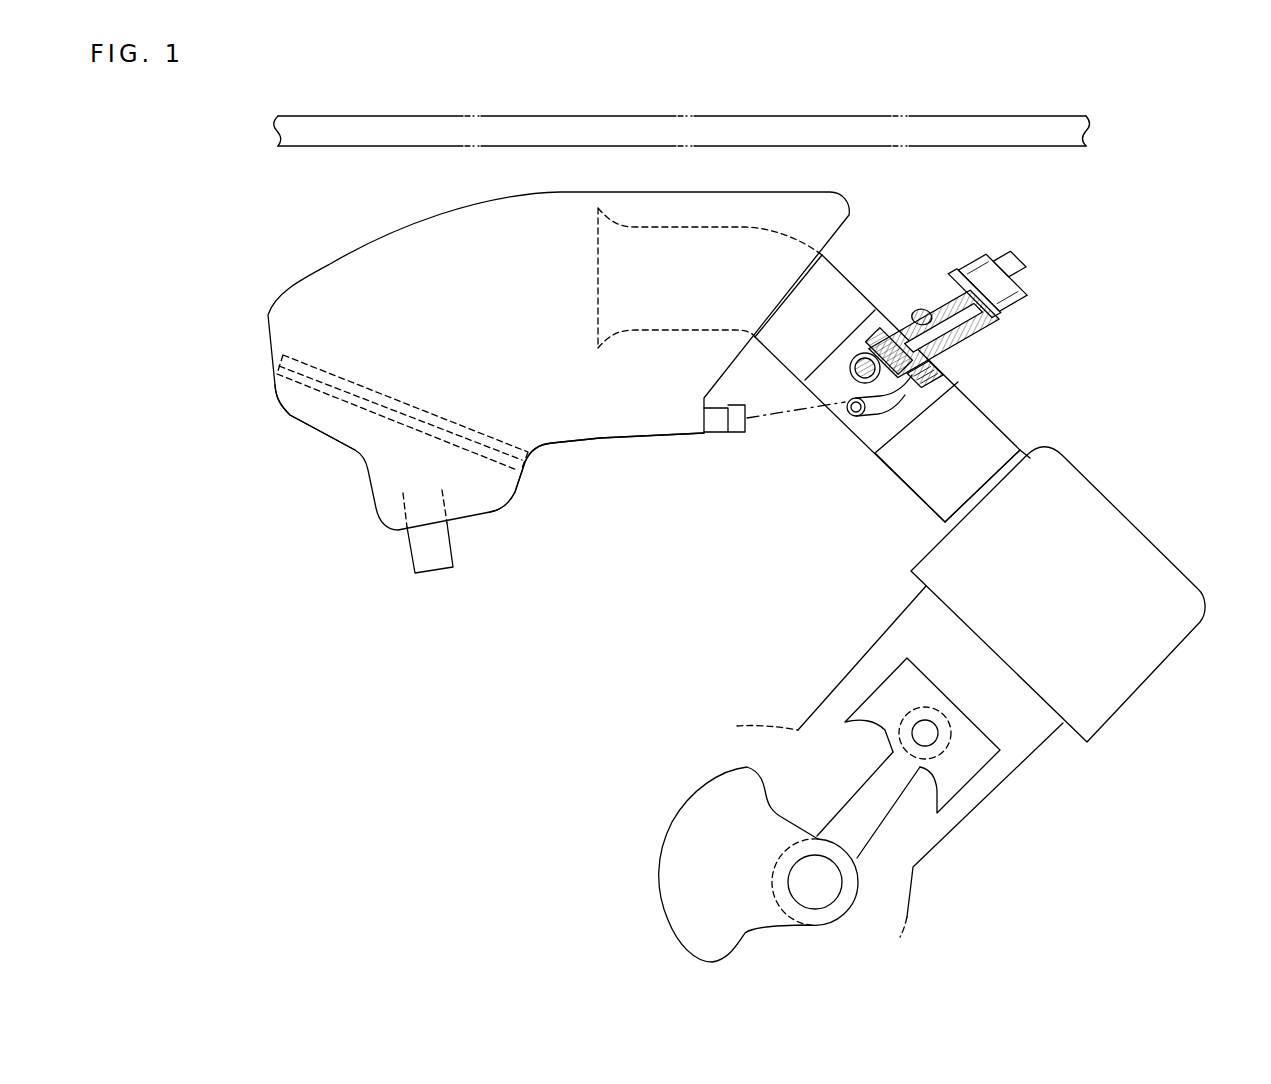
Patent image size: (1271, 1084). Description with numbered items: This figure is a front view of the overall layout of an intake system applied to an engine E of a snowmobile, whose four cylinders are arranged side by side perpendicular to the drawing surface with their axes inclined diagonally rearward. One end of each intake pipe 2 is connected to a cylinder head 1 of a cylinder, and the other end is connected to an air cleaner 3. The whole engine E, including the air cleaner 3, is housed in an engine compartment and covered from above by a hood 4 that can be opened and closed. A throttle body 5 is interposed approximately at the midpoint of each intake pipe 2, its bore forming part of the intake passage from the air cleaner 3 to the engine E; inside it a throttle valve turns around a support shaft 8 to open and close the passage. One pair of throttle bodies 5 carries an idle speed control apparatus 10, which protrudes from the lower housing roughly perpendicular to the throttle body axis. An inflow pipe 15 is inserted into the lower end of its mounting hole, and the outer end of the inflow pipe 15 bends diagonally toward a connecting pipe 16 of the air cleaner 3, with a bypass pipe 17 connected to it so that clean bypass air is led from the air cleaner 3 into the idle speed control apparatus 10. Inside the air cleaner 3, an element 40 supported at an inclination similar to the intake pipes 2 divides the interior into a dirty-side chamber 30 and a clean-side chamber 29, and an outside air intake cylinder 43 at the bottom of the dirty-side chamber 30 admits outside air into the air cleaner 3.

The cylinder head 1 is at (1130, 543).
The intake pipe 2 is at (838, 288).
The air cleaner 3 is at (304, 249).
The hood 4 is at (1046, 148).
The throttle body 5 is at (877, 430).
The support shaft 8 is at (865, 355).
The idle speed control apparatus 10 is at (1047, 292).
The inflow pipe 15 is at (901, 366).
The connecting pipe 16 is at (714, 427).
The bypass pipe 17 is at (797, 420).
The clean-side chamber 29 is at (620, 430).
The dirty-side chamber 30 is at (333, 423).
The element 40 is at (530, 460).
The outside air intake cylinder 43 is at (420, 550).
The engine E is at (1050, 767).